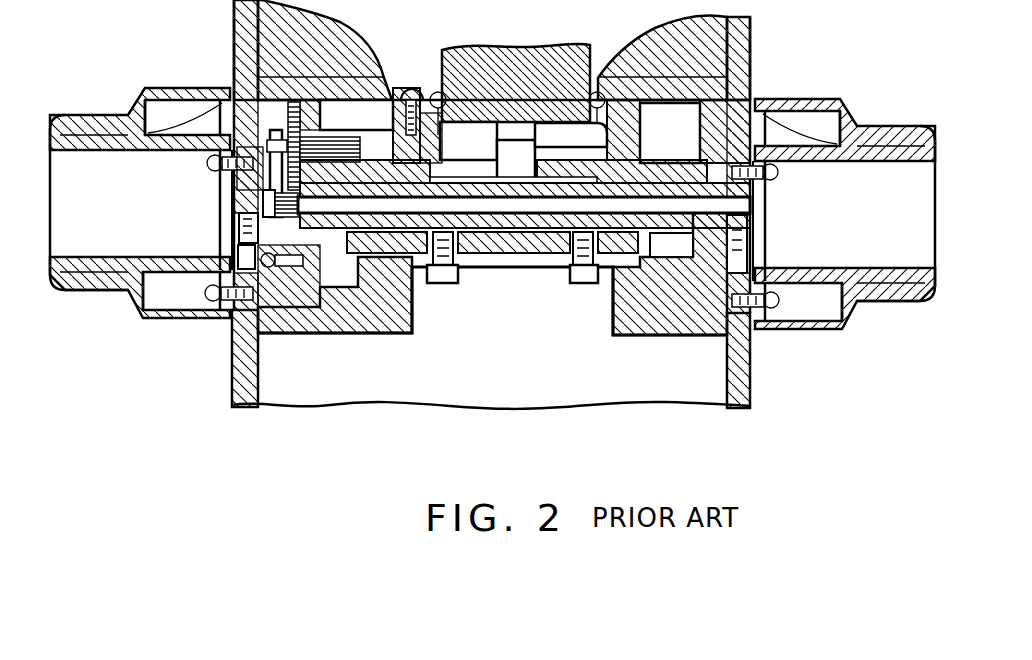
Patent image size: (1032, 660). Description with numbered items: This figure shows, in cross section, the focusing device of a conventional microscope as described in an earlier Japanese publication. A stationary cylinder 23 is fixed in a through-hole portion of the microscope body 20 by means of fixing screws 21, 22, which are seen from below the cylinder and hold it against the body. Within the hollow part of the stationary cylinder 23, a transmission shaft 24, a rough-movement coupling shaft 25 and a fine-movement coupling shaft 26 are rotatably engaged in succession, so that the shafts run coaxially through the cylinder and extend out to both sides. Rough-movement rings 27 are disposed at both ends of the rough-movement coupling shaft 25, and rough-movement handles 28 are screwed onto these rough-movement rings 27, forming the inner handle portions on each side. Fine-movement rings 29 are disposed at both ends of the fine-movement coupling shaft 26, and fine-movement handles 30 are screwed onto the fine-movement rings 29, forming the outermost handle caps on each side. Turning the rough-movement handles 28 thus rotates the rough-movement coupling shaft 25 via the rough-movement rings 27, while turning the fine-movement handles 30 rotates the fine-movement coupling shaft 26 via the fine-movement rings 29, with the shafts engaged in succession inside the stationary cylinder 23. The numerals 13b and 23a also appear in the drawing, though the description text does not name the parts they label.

The microscope body 20 is at (245, 32).
The base frame 13b is at (294, 308).
The fixing screw 21 is at (452, 284).
The fixing screw 22 is at (590, 285).
The stationary cylinder 23 is at (470, 164).
The fixing screw 23a is at (205, 292).
The transmission shaft 24 is at (414, 268).
The rough-movement coupling shaft 25 is at (532, 253).
The fine-movement coupling shaft 26 is at (497, 205).
The rough-movement ring 27 is at (355, 308).
The rough-movement handle 28 is at (176, 315).
The fine-movement ring 29 is at (236, 224).
The fine-movement handle 30 is at (89, 285).